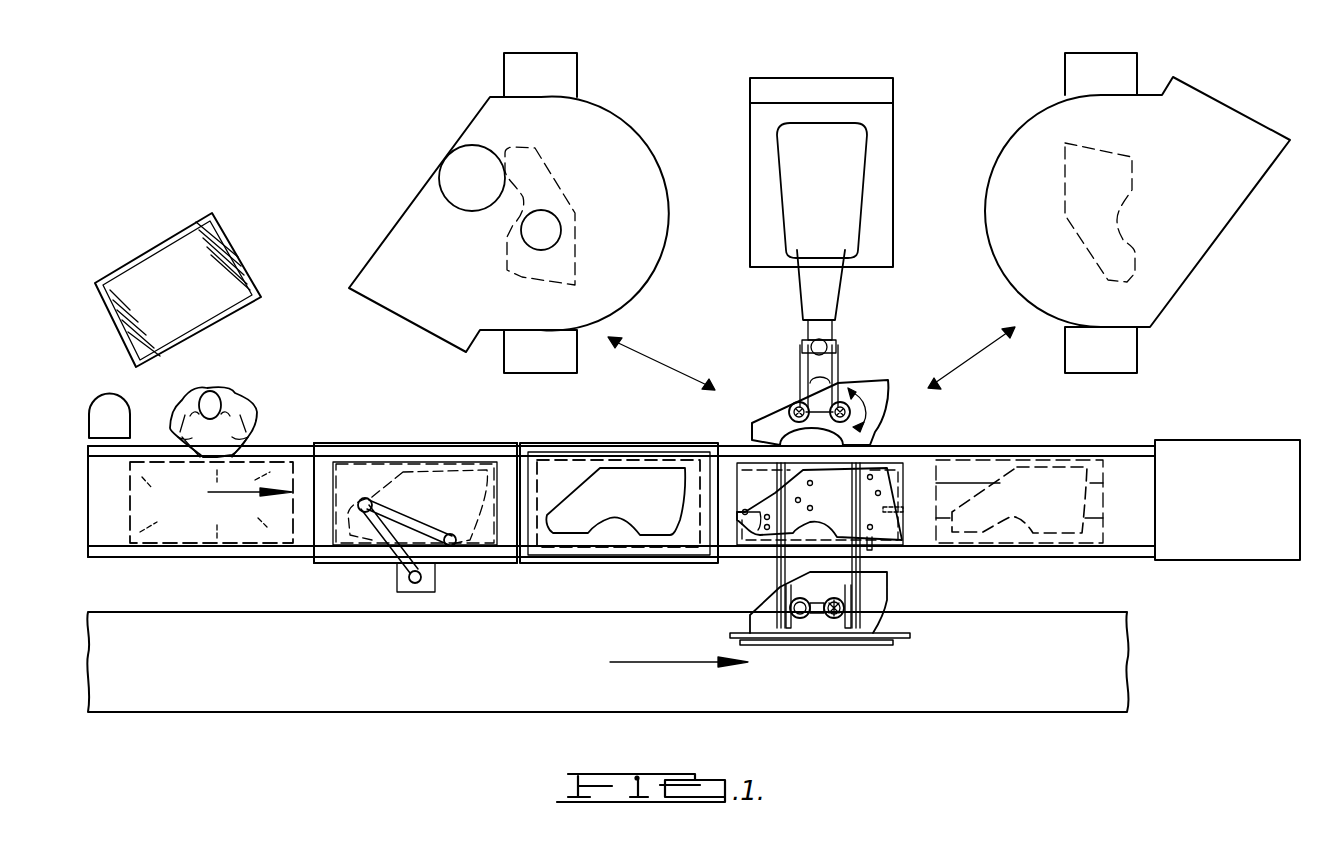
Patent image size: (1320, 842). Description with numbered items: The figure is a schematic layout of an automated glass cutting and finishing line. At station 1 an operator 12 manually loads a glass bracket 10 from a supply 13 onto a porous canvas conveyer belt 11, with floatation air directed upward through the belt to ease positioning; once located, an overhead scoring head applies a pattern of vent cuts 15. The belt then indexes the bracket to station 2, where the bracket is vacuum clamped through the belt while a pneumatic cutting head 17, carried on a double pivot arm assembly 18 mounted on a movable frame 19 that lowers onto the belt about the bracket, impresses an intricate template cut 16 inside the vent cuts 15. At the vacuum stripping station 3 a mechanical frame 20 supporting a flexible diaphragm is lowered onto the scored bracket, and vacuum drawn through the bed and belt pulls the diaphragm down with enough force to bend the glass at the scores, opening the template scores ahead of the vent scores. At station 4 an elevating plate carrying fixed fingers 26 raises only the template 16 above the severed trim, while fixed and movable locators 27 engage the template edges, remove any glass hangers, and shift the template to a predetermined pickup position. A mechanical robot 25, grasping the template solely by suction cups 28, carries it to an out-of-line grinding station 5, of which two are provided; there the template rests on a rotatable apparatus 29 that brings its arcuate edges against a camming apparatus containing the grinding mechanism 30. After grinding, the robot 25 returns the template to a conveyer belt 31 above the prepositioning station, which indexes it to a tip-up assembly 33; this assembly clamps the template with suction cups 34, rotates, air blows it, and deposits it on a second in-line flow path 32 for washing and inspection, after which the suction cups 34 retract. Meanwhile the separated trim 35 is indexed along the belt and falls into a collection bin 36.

The station 1 is at (217, 373).
The station 2 is at (418, 432).
The vacuum stripping station 3 is at (632, 432).
The station 4 is at (774, 393).
The grinding station 5 is at (620, 247).
The glass bracket 10 is at (294, 468).
The porous canvas conveyer belt 11 is at (108, 548).
The operator 12 is at (242, 398).
The supply 13 is at (236, 242).
The vent cuts 15 is at (273, 522).
The template cut 16 is at (353, 537).
The pneumatic cutting head 17 is at (452, 548).
The double pivot arm assembly 18 is at (420, 520).
The movable frame 19 is at (490, 555).
The mechanical frame 20 is at (622, 555).
The mechanical robot 25 is at (842, 288).
The fixed fingers 26 is at (840, 522).
The fixed and movable locators 27 is at (902, 490).
The suction cups 28 is at (843, 400).
The rotatable apparatus 29 is at (546, 210).
The grinding mechanism 30 is at (455, 153).
The conveyer belt 31 is at (863, 565).
The second in-line flow path 32 is at (1006, 690).
The tip-up assembly 33 is at (810, 626).
The suction cups 34 is at (832, 582).
The separated trim 35 is at (968, 468).
The collection bin 36 is at (1218, 447).